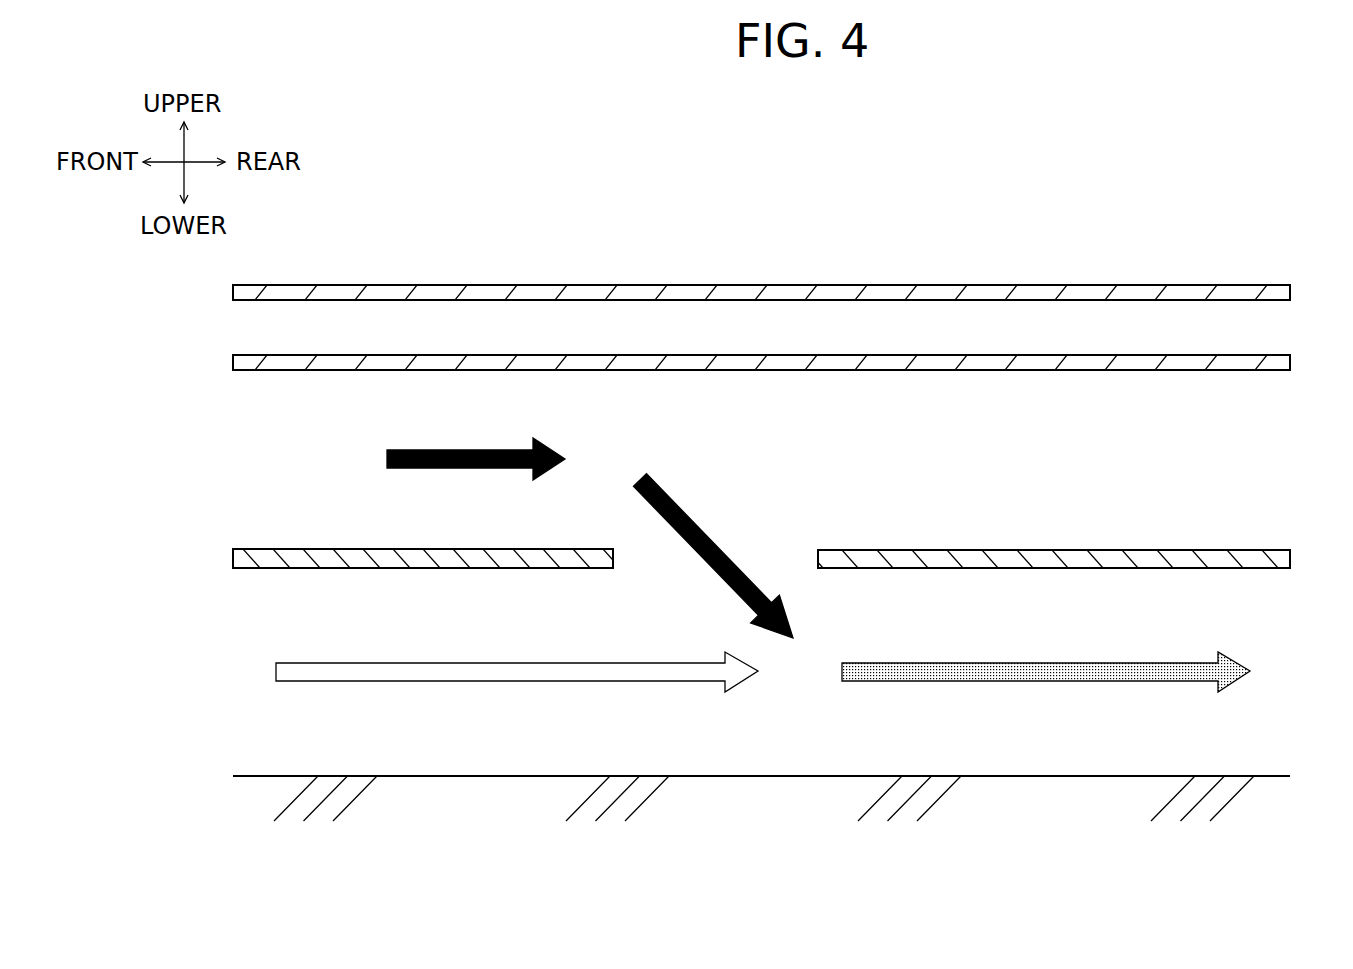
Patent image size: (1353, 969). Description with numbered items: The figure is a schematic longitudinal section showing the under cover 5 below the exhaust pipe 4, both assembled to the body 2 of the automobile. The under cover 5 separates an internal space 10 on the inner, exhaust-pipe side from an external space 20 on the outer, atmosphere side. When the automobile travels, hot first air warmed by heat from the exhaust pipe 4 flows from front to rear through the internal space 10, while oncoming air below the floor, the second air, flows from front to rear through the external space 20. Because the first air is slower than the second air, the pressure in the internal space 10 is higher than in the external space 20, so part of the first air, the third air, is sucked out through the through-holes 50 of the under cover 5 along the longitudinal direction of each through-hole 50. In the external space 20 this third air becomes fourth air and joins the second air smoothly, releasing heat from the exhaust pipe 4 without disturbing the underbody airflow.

The body 2 is at (945, 155).
The exhaust pipe 4 is at (1043, 290).
The under cover below the exhaust pipe 5 is at (1043, 555).
The through-hole 50 is at (818, 560).
The internal space 10 is at (1206, 461).
The external space 20 is at (1206, 610).